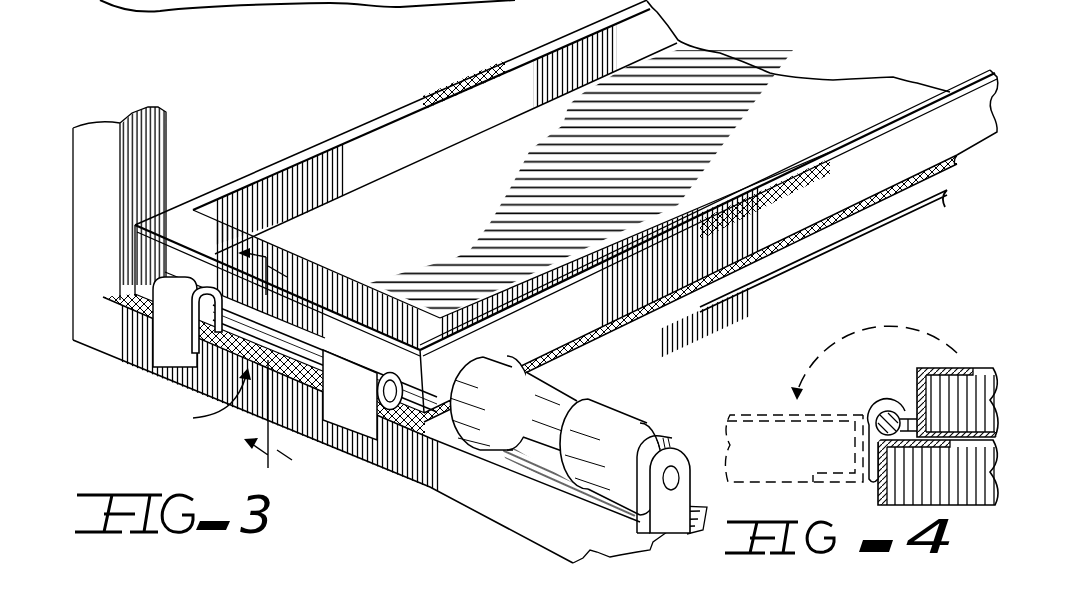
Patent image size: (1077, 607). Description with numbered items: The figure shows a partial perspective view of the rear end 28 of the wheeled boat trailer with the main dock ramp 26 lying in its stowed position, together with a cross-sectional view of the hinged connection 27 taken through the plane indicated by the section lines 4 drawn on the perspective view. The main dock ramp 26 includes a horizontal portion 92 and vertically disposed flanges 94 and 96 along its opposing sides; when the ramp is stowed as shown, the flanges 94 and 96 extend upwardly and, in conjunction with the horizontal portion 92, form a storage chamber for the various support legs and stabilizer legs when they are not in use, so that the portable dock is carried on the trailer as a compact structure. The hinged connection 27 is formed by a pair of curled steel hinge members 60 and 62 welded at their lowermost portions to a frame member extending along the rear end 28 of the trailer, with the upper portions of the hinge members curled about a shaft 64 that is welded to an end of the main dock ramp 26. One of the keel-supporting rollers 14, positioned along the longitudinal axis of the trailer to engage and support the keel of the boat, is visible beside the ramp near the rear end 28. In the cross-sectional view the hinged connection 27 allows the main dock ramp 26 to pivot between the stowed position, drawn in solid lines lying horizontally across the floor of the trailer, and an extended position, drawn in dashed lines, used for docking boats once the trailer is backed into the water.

In FIG. 3, the front end 4 is at (272, 365).
In FIG. 3, the roller 14 is at (586, 410).
In FIG. 3, the main dock ramp 26 is at (796, 141).
In FIG. 4, the main dock ramp 26 is at (983, 368).
In FIG. 3, the hinged connection 27 is at (210, 400).
In FIG. 4, the hinged connection 27 is at (908, 398).
In FIG. 3, the rear end 28 is at (497, 505).
In FIG. 4, the rear end 28 is at (877, 480).
In FIG. 3, the hinge member 60 is at (160, 368).
In FIG. 4, the hinge member 60 is at (872, 412).
In FIG. 3, the hinge member 62 is at (355, 430).
In FIG. 3, the shaft 64 is at (302, 340).
In FIG. 4, the shaft 64 is at (897, 410).
In FIG. 3, the horizontal portion 92 is at (777, 84).
In FIG. 3, the flange 94 is at (652, 35).
In FIG. 3, the flange 96 is at (918, 127).